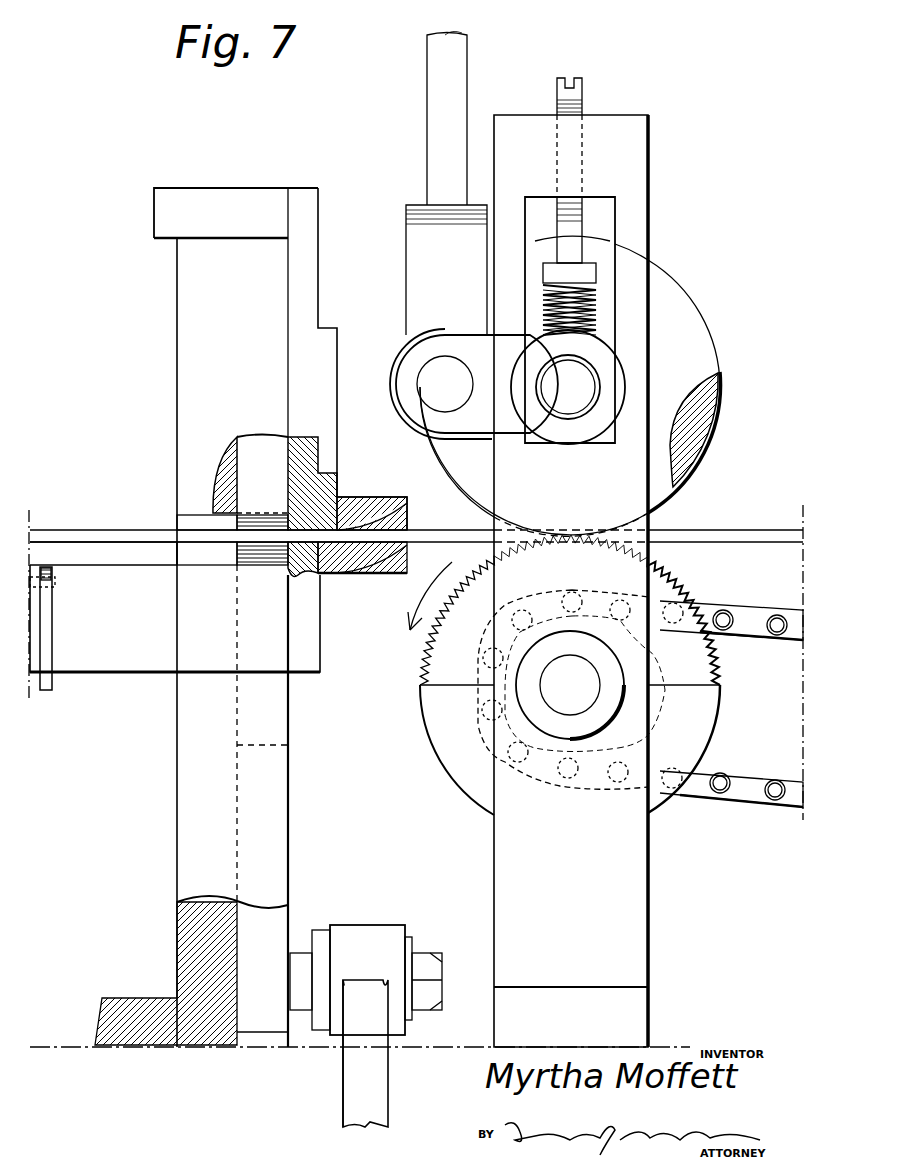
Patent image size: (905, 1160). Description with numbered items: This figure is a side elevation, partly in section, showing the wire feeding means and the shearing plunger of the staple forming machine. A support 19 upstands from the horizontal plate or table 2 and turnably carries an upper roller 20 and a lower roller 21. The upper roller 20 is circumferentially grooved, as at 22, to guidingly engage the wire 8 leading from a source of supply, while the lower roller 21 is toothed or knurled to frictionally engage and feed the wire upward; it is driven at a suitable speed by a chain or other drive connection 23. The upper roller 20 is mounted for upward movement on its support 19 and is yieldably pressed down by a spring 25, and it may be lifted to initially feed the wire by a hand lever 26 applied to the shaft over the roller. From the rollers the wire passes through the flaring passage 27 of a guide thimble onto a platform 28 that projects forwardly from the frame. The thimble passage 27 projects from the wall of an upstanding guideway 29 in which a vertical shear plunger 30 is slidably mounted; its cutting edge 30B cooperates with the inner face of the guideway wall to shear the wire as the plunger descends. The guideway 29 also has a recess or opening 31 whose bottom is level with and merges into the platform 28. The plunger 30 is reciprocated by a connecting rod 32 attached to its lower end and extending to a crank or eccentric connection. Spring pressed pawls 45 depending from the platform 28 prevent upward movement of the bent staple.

The plate or table 2 is at (672, 1045).
The wire 8 is at (108, 530).
The support 19 is at (625, 888).
The upper roller 20 is at (680, 330).
The lower roller 21 is at (470, 655).
The groove 22 is at (705, 448).
The chain or drive connection 23 is at (742, 792).
The spring 25 is at (585, 290).
The hand lever 26 is at (495, 350).
The thimble passage 27 is at (350, 520).
The platform 28 is at (122, 655).
The guideway 29 is at (205, 345).
The shear plunger 30 is at (256, 440).
The bearing 30B is at (285, 528).
The recess or opening 31 is at (195, 552).
The connecting rod 32 is at (365, 1080).
The spring pressed pawls 45 is at (48, 628).